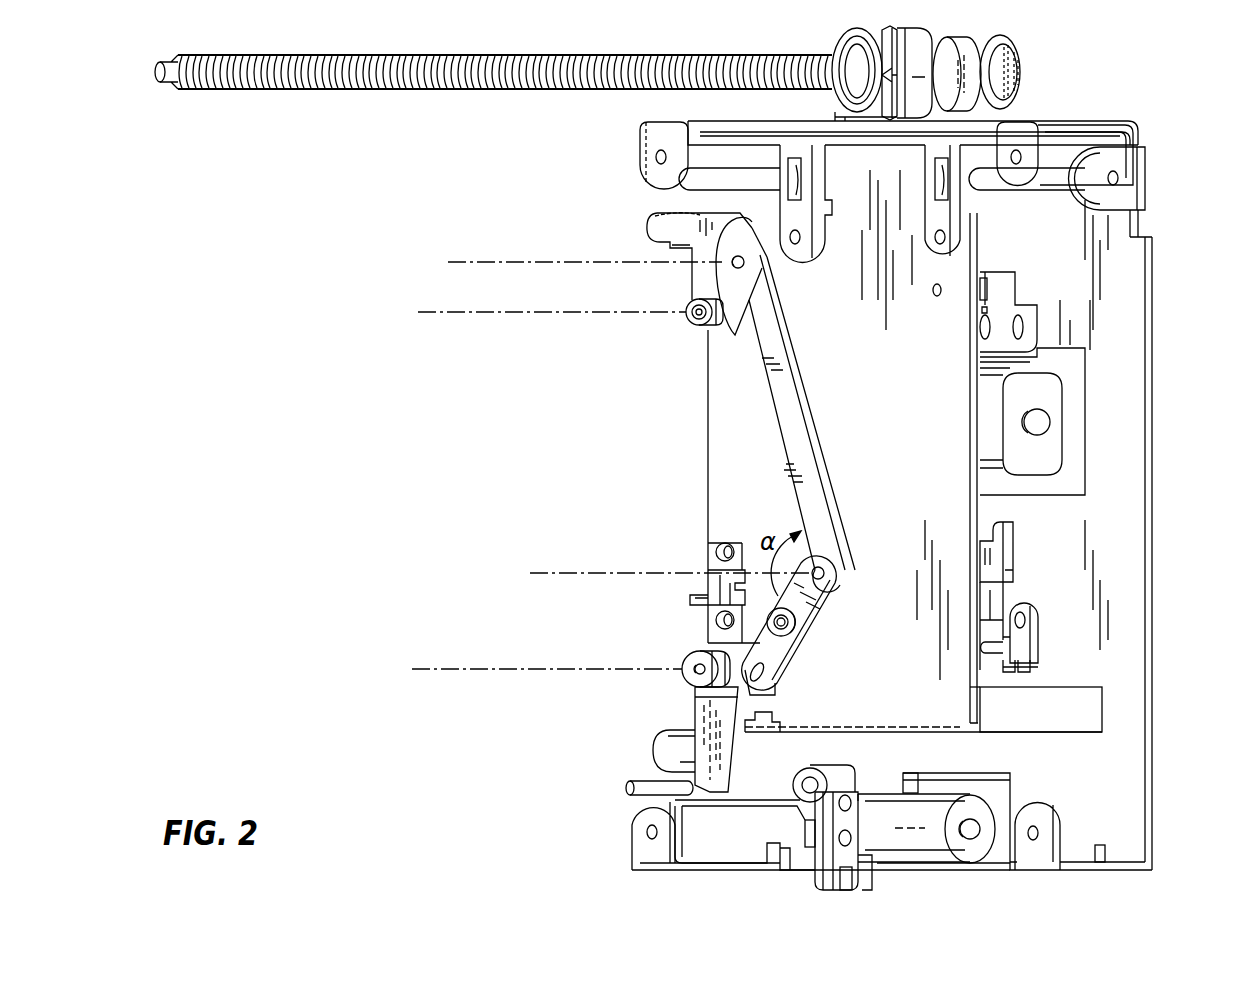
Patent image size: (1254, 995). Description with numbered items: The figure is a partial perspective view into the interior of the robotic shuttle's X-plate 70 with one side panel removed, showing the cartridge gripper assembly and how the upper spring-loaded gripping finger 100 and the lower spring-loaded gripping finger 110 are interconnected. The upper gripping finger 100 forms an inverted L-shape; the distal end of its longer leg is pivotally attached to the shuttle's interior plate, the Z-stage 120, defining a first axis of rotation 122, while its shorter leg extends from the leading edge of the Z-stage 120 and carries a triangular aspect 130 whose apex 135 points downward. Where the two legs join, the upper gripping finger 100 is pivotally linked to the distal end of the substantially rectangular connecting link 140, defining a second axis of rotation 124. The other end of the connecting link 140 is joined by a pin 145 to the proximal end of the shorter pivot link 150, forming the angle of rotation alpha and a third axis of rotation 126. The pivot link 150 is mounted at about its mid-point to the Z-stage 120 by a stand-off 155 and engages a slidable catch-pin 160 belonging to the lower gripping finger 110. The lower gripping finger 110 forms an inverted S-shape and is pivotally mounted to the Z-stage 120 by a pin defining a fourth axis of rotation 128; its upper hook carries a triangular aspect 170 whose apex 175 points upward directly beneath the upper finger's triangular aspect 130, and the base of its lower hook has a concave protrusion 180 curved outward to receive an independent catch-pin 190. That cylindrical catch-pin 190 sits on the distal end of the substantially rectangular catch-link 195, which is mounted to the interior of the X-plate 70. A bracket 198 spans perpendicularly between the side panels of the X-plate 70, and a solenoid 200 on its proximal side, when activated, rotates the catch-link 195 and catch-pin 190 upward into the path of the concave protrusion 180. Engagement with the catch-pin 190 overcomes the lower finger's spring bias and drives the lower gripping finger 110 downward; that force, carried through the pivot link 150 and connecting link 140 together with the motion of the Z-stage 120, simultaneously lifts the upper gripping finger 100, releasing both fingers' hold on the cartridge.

The X-plate 70 is at (1123, 353).
The upper spring-loaded gripping finger 100 is at (660, 212).
The lower spring-loaded gripping finger 110 is at (690, 752).
The Z-stage 120 is at (740, 455).
The first axis of rotation 122 is at (496, 313).
The second axis of rotation 124 is at (522, 263).
The third axis of rotation 126 is at (593, 576).
The fourth axis of rotation 128 is at (466, 671).
The triangular aspect 130 is at (658, 233).
The apex 135 is at (700, 263).
The connecting link 140 is at (797, 422).
The pin 145 is at (825, 579).
The pivot link 150 is at (812, 626).
The stand-off 155 is at (780, 632).
The slidable catch-pin 160 is at (768, 692).
The triangular aspect 170 is at (662, 742).
The apex 175 is at (708, 710).
The concave protrusion 180 is at (692, 800).
The independent catch-pin 190 is at (630, 790).
The catch-link 195 is at (770, 793).
The bracket 198 is at (842, 822).
The solenoid 200 is at (985, 842).